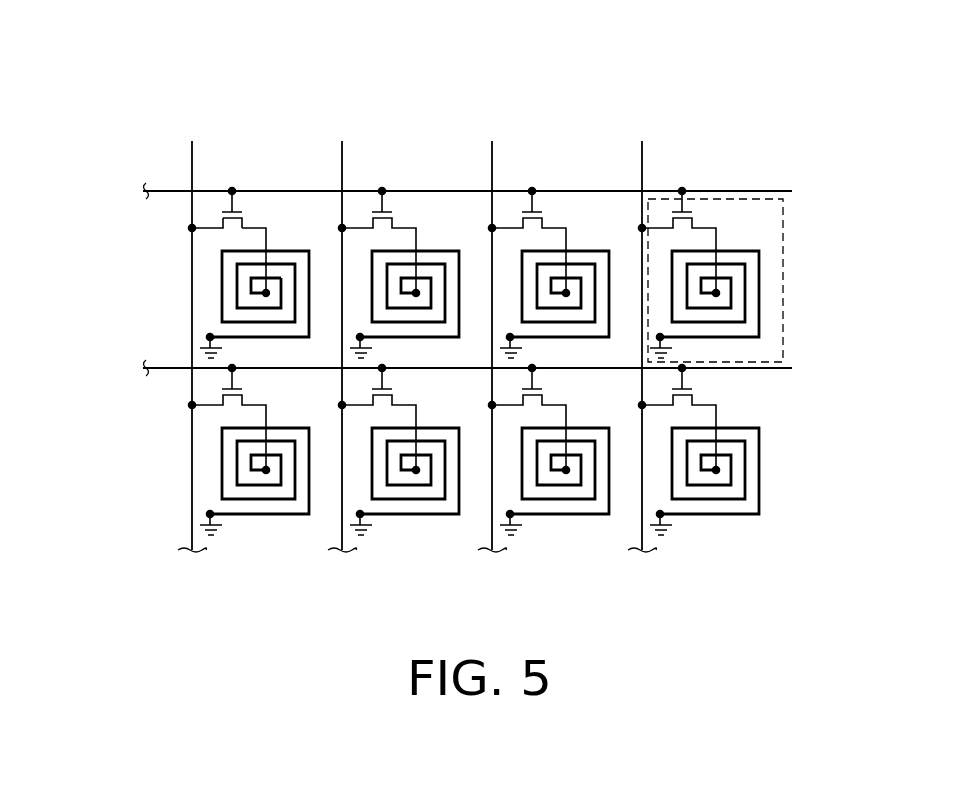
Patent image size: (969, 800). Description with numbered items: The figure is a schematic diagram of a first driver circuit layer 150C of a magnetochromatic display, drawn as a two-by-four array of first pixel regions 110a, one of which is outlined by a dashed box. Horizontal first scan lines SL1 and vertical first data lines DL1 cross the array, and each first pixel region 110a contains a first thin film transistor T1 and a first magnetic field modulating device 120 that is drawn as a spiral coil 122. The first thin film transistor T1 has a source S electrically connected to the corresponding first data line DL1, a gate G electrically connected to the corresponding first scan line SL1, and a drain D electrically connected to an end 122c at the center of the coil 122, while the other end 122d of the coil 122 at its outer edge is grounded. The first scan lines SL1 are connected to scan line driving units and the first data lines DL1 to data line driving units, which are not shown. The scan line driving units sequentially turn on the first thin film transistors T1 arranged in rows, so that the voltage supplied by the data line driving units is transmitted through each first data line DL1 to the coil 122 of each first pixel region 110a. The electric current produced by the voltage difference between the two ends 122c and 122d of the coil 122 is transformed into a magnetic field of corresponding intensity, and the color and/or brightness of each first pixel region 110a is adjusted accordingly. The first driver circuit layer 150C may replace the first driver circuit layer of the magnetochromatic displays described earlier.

The first driver circuit layer 150C is at (460, 335).
The first scan line SL1 is at (775, 190).
The first data line DL1 is at (192, 172).
The first thin film transistor T1 is at (246, 172).
The source S is at (208, 212).
The gate G is at (248, 201).
The drain D is at (271, 217).
The coil 122 is at (184, 289).
The first magnetic field modulating device 120 is at (184, 289).
The end of the coil 122c is at (255, 288).
The other end of the coil 122d is at (200, 336).
The first pixel region 110a is at (785, 333).